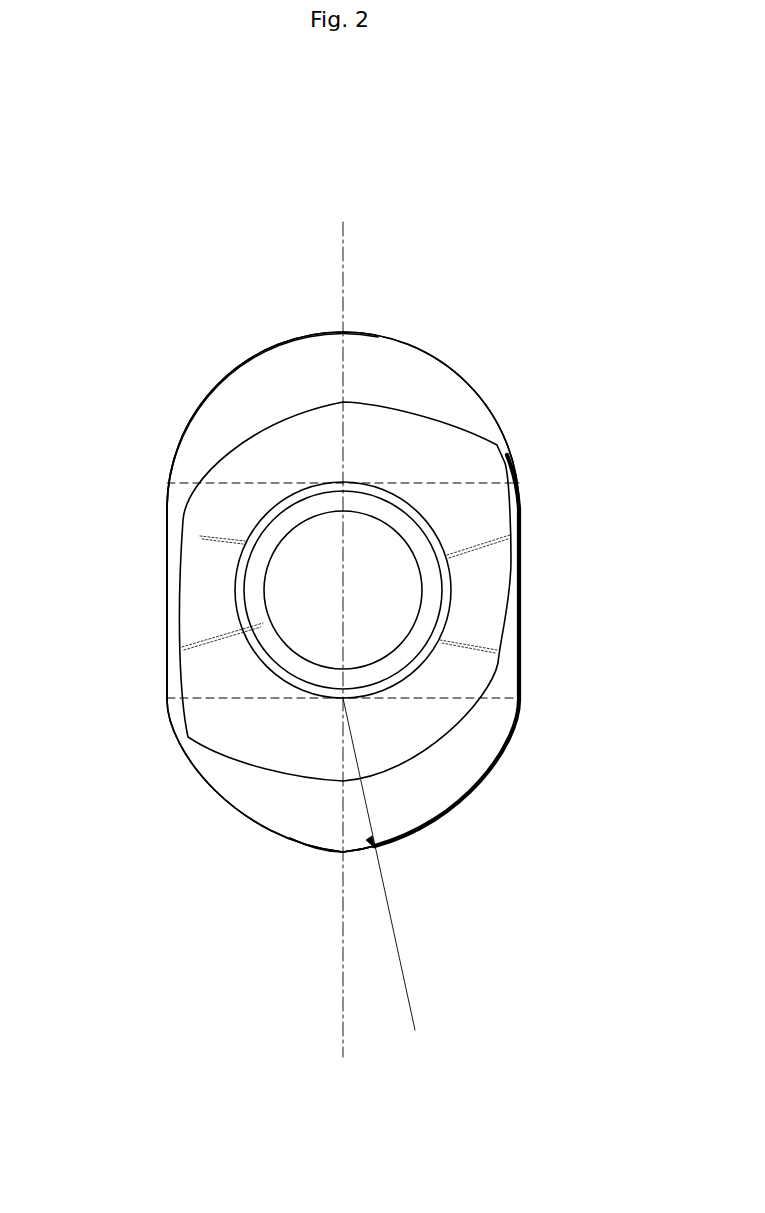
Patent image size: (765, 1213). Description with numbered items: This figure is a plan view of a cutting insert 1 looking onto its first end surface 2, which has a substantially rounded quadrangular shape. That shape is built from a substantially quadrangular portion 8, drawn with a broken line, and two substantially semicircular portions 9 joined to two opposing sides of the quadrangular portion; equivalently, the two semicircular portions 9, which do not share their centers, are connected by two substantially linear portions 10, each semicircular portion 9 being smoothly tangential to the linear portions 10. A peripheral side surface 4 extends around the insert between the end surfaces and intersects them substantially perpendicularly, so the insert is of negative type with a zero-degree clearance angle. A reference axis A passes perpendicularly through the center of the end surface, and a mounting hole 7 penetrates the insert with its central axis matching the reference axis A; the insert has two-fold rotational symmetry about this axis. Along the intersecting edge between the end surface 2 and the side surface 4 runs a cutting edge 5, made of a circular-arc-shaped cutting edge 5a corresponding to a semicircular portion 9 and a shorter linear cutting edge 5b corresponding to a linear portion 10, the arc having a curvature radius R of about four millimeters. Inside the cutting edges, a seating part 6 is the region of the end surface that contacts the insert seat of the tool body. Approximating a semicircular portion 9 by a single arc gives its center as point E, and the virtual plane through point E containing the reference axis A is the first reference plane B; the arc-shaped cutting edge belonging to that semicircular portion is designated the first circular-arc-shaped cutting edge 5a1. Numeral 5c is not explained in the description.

The cutting insert 1 is at (542, 261).
The first end surface 2 is at (462, 510).
The peripheral side surface 4 is at (525, 550).
The cutting edge 5 is at (255, 357).
The circular-arc-shaped cutting edge 5a is at (308, 335).
The first circular-arc-shaped cutting edge 5a1 is at (443, 820).
The linear cutting edge 5b is at (163, 510).
The apex contour section 5c is at (367, 332).
The seating part 6 is at (287, 460).
The mounting hole 7 is at (267, 625).
The substantially quadrangular portion 8 is at (198, 587).
The substantially semicircular portion 9 is at (430, 427).
The substantially linear portion 10 is at (167, 540).
The reference axis A is at (343, 590).
The first reference plane B is at (342, 1002).
The point E is at (343, 698).
The curvature radius R is at (385, 864).